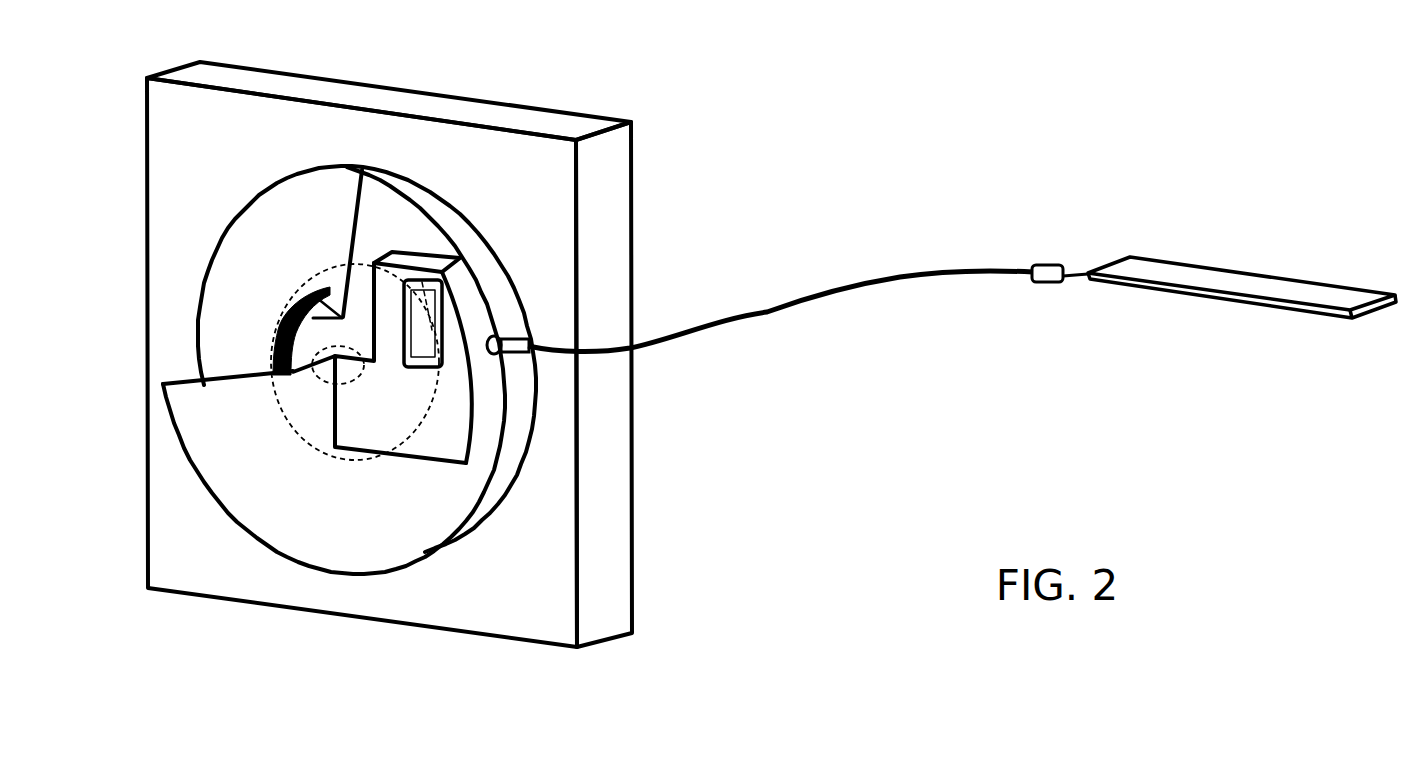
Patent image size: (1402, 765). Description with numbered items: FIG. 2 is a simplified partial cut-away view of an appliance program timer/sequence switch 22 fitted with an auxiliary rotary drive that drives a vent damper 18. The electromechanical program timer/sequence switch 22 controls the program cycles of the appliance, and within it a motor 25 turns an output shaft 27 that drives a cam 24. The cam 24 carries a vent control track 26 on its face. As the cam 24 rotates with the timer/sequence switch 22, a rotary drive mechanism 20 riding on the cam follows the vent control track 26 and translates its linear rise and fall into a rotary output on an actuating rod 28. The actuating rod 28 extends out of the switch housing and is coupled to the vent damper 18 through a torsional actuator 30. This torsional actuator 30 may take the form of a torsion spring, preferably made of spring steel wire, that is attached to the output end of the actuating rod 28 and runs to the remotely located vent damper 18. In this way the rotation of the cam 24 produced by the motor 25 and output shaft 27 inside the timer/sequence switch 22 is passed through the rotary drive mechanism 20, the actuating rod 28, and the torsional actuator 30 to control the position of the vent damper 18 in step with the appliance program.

The vent damper 18 is at (1270, 290).
The rotary drive mechanism 20 is at (458, 430).
The program timer/sequence switch 22 is at (583, 122).
The cam 24 is at (320, 193).
The motor 25 is at (305, 292).
The vent control track 26 is at (277, 325).
The output shaft 27 is at (310, 357).
The actuating rod 28 is at (526, 329).
The torsional actuator 30 is at (927, 270).